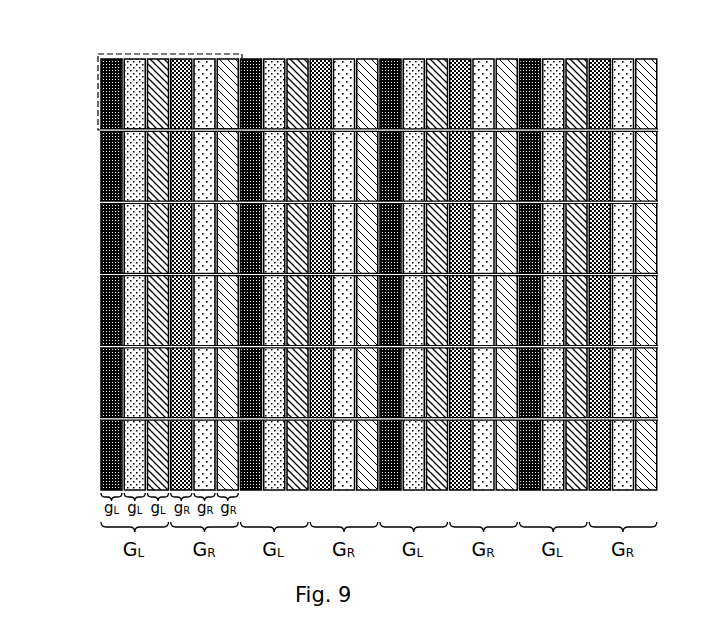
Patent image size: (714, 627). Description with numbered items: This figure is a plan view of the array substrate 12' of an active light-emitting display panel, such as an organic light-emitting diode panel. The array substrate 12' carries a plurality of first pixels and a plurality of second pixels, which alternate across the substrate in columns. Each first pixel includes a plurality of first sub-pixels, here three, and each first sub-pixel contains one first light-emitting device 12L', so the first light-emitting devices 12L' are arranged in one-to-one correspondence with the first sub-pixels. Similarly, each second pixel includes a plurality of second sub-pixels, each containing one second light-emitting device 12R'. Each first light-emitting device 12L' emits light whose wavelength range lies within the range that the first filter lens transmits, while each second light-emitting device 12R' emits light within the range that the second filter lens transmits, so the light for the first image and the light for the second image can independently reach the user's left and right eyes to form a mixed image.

The array substrate 12' is at (345, 255).
The first light-emitting device 12L' is at (98, 94).
The second light-emitting device 12R' is at (133, 94).